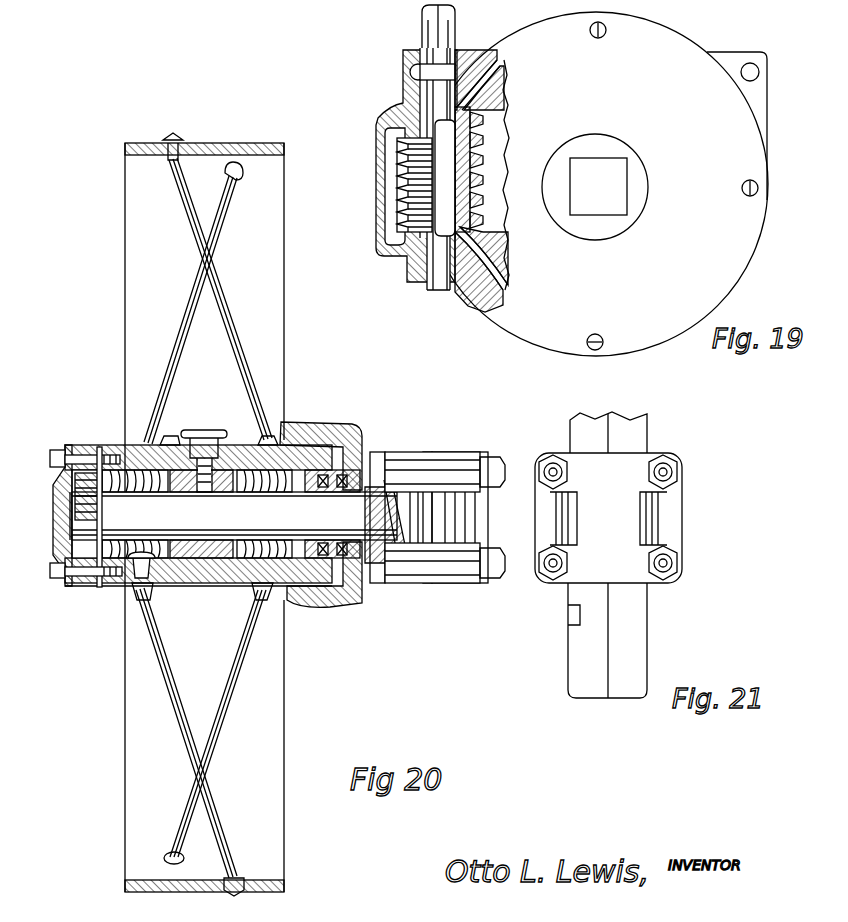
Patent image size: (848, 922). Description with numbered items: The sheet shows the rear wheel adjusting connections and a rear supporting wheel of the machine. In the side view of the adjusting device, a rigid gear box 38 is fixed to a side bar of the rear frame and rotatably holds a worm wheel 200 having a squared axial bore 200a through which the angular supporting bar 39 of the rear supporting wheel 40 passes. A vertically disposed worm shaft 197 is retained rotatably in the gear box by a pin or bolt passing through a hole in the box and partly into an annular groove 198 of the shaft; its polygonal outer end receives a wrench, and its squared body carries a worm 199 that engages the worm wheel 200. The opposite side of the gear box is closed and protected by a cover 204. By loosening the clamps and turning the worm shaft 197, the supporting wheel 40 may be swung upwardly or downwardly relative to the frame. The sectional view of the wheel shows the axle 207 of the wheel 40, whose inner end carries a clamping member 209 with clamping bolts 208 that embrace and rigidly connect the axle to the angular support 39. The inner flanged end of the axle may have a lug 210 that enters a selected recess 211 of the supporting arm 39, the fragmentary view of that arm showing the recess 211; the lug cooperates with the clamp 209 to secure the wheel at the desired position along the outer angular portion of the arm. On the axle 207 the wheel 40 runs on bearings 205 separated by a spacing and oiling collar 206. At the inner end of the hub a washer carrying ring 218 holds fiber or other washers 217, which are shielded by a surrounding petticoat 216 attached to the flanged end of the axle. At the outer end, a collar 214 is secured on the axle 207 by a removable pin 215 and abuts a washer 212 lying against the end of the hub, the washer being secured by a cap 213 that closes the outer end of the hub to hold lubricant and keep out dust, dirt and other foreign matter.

In FIG. 19, the gear box 38 is at (402, 82).
In FIG. 21, the angular supporting bar 39 is at (655, 636).
In FIG. 20, the rear supporting wheel 40 is at (286, 860).
In FIG. 19, the worm shaft 197 is at (420, 30).
In FIG. 19, the annular groove 198 is at (438, 72).
In FIG. 19, the worm 199 is at (405, 215).
In FIG. 19, the worm wheel 200 is at (497, 243).
In FIG. 19, the squared axial bore 200a is at (625, 182).
In FIG. 19, the cover 204 is at (596, 178).
In FIG. 20, the bearings 205 is at (248, 562).
In FIG. 20, the spacing and oiling collar 206 is at (210, 558).
In FIG. 20, the axle 207 is at (265, 521).
In FIG. 21, the clamping bolts 208 is at (546, 476).
In FIG. 20, the clamping member 209 is at (452, 594).
In FIG. 21, the clamping member 209 is at (625, 524).
In FIG. 20, the lug 210 is at (390, 560).
In FIG. 21, the recess 211 is at (570, 620).
In FIG. 20, the washer 212 is at (100, 588).
In FIG. 20, the cap 213 is at (65, 580).
In FIG. 20, the collar 214 is at (62, 462).
In FIG. 20, the removable pin 215 is at (86, 476).
In FIG. 20, the petticoat 216 is at (328, 424).
In FIG. 20, the fiber washers 217 is at (345, 606).
In FIG. 20, the washer carrying ring 218 is at (290, 596).